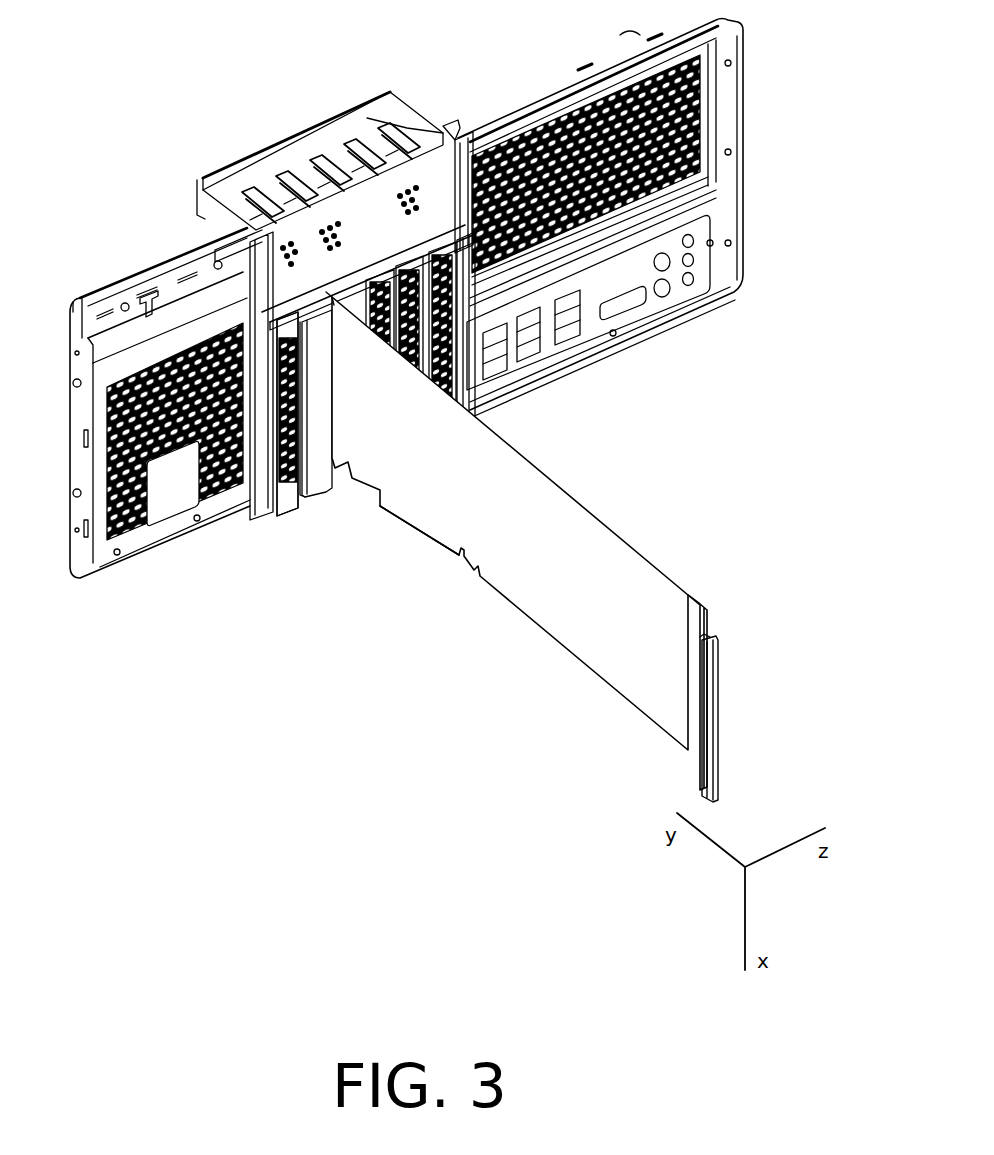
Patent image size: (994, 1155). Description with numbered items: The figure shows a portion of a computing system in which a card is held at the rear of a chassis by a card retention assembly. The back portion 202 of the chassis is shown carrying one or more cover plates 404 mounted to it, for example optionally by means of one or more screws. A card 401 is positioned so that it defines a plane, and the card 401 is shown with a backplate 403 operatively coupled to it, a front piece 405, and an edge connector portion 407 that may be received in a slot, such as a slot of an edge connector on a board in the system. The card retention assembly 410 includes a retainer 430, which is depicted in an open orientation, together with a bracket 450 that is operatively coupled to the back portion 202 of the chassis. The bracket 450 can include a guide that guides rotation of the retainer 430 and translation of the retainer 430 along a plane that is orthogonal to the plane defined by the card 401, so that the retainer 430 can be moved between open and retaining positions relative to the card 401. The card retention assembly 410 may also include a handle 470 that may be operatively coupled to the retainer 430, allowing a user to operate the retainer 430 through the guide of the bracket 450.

The back portion 202 is at (205, 253).
The card 401 is at (507, 521).
The backplate 403 is at (323, 358).
The cover plates 404 is at (467, 370).
The front piece 405 is at (687, 600).
The edge connector portion 407 is at (443, 545).
The card retention assembly 410 is at (334, 170).
The retainer 430 is at (417, 127).
The bracket 450 is at (458, 143).
The handle 470 is at (330, 140).